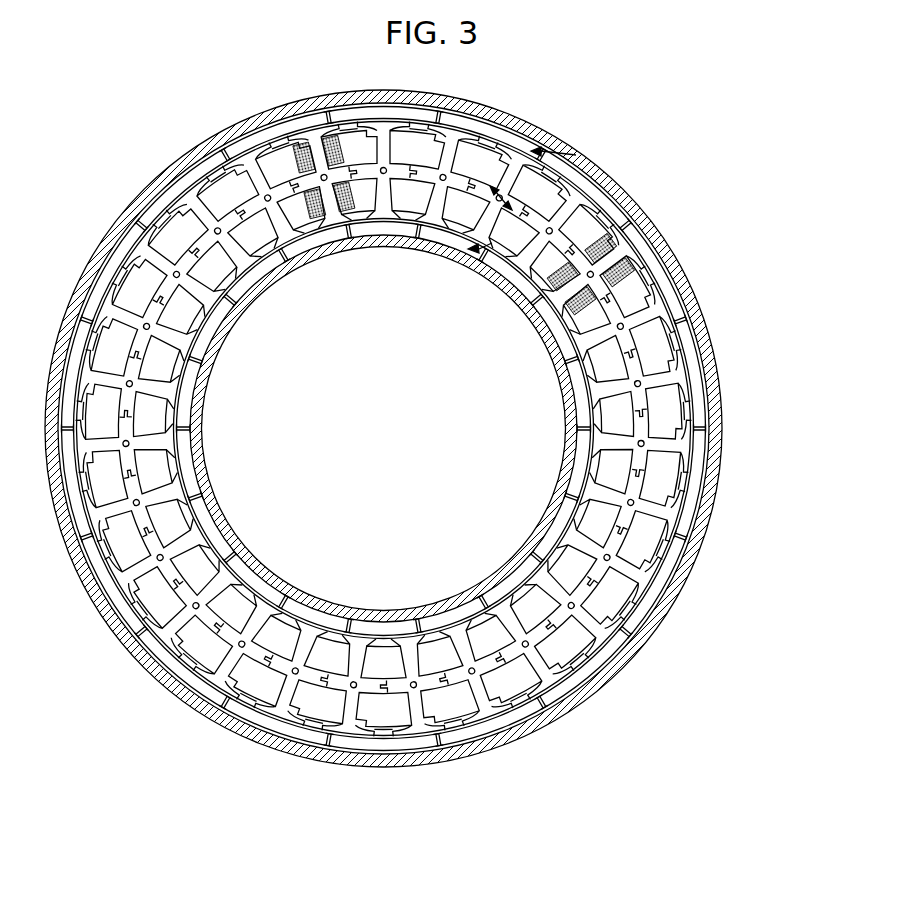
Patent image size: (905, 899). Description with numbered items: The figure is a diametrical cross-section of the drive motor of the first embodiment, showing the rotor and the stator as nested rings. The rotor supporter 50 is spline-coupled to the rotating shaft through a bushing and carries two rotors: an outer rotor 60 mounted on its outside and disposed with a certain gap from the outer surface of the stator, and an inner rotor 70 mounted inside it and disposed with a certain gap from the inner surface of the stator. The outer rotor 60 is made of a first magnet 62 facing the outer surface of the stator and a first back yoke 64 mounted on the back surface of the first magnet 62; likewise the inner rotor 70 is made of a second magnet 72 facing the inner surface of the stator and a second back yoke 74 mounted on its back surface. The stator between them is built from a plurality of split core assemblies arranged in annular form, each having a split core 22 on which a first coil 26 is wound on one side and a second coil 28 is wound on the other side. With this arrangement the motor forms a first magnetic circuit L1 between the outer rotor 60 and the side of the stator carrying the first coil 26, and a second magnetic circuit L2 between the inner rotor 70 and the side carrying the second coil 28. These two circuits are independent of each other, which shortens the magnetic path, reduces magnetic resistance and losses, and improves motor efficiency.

The split core 22 is at (617, 255).
The first coil 26 is at (627, 279).
The second coil 28 is at (552, 277).
The rotor supporter 50 is at (722, 408).
The outer rotor 60 is at (442, 429).
The first magnet 62 is at (688, 337).
The first back yoke 64 is at (700, 372).
The inner rotor 70 is at (384, 429).
The second magnet 72 is at (587, 445).
The second back yoke 74 is at (565, 482).
The first magnetic circuit L1 is at (576, 155).
The second magnetic circuit L2 is at (565, 252).